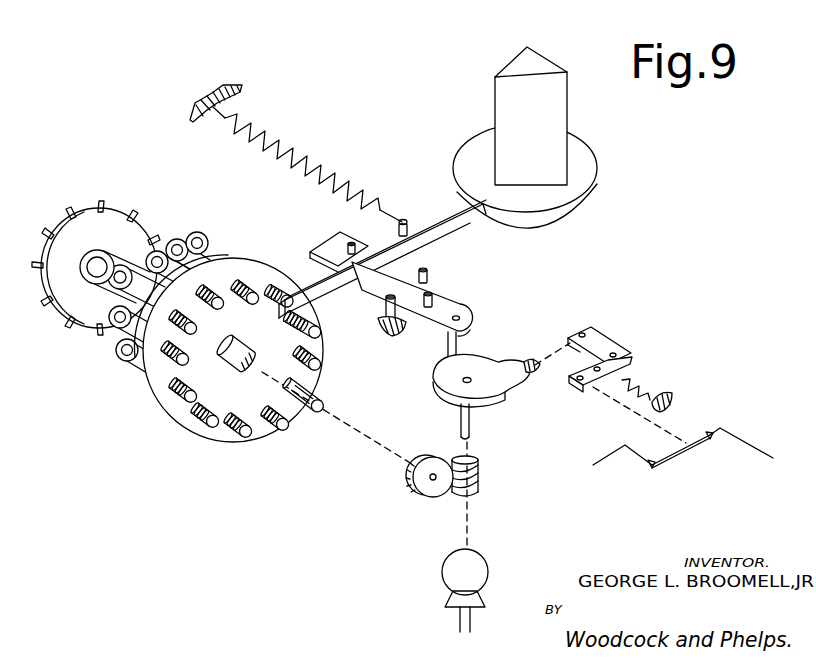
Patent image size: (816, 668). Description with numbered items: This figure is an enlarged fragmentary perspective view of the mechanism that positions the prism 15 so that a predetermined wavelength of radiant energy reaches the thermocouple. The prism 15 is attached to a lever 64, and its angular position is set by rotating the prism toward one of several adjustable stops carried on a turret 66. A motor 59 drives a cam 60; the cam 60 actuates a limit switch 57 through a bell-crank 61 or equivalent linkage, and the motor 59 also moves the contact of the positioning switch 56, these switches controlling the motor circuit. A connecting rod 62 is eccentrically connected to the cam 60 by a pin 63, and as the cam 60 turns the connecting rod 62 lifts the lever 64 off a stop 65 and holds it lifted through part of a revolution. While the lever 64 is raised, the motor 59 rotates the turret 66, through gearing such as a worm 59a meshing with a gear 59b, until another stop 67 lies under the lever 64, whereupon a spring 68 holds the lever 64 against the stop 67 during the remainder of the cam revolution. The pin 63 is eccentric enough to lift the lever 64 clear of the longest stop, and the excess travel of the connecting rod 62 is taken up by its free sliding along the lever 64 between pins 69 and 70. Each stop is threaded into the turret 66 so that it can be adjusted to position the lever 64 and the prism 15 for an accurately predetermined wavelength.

The prism 15 is at (495, 95).
The positioning switch 56 is at (88, 210).
The limit switch 57 is at (680, 450).
The motor 59 is at (482, 562).
The worm 59a is at (480, 475).
The gear 59b is at (420, 487).
The cam 60 is at (498, 396).
The bell-crank 61 is at (612, 349).
The connecting rod 62 is at (447, 312).
The pin 63 is at (458, 345).
The lever 64 is at (431, 215).
The stop 65 is at (274, 287).
The turret 66 is at (240, 276).
The stop 67 is at (322, 338).
The spring 68 is at (290, 148).
The pin 69 is at (432, 294).
The pin 70 is at (348, 250).